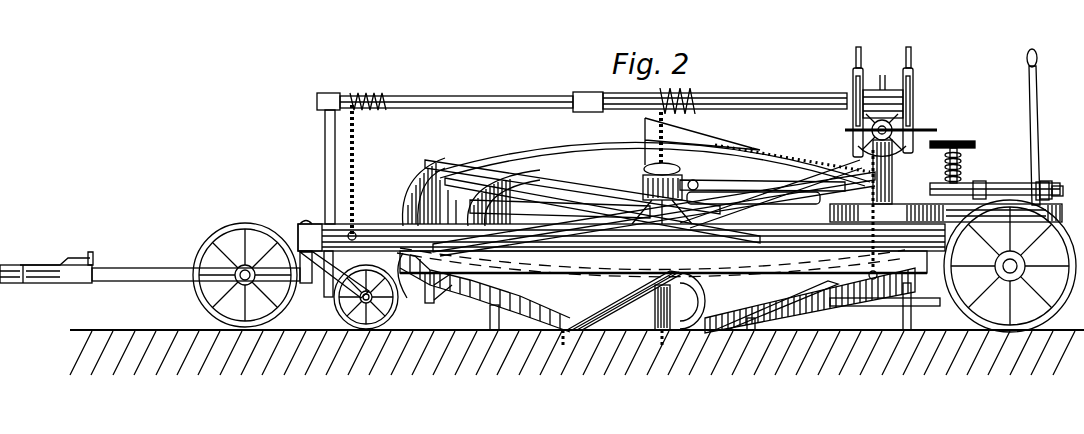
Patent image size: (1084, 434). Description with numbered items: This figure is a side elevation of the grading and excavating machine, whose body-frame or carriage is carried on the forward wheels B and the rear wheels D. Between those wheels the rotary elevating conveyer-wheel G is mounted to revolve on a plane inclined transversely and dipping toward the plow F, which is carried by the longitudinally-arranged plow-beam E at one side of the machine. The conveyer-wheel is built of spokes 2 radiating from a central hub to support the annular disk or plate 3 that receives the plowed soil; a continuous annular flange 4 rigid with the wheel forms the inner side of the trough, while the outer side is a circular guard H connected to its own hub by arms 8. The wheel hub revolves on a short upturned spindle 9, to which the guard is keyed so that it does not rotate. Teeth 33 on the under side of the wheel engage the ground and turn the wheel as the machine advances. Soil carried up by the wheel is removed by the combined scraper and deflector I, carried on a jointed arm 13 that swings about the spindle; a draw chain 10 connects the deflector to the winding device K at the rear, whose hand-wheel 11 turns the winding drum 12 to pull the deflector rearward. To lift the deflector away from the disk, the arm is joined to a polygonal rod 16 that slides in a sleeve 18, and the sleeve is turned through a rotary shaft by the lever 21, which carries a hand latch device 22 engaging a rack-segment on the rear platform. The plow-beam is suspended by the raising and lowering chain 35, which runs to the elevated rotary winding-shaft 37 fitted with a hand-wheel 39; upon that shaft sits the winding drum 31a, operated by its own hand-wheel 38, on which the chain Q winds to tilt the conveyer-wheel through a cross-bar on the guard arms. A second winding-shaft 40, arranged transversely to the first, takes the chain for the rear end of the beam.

The spokes 2 is at (622, 189).
The annular disk or plate 3 is at (456, 182).
The annular flange 4 is at (600, 160).
The spokes or arms 8 is at (542, 200).
The upturned spindle or axle 9 is at (646, 168).
The draw chain or cable 10 is at (785, 162).
The hand-wheel 11 is at (957, 133).
The winding shaft or drum 12 is at (945, 163).
The arm 13 is at (688, 153).
The rod or shaft 16 is at (745, 182).
The sleeve 18 is at (802, 185).
The arm or lever 21 is at (1028, 93).
The hand latch device 22 is at (1055, 169).
The winding drum or sleeve 31a is at (748, 100).
The teeth 33 is at (500, 300).
The raising and lowering chain 35 is at (356, 140).
The rotary winding-shaft 37 is at (460, 89).
The hand-wheel 38 is at (856, 60).
The hand-wheel 39 is at (913, 86).
The winding-shaft 40 is at (906, 126).
The forward wheels B is at (168, 246).
The rear wheels D is at (1014, 266).
The plow-beam E is at (662, 263).
The plow F is at (600, 290).
The rotary elevating conveyer-wheel G is at (602, 186).
The guard H is at (378, 190).
The combined scraper and deflector I is at (695, 137).
The winding device K is at (1010, 147).
The chain Q is at (690, 96).